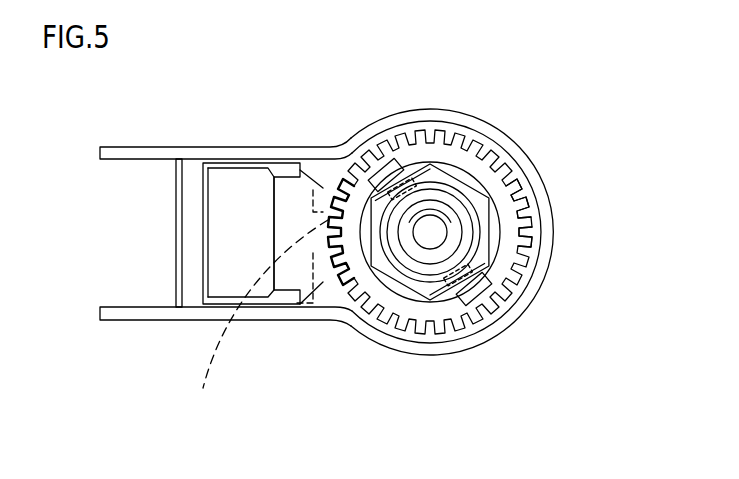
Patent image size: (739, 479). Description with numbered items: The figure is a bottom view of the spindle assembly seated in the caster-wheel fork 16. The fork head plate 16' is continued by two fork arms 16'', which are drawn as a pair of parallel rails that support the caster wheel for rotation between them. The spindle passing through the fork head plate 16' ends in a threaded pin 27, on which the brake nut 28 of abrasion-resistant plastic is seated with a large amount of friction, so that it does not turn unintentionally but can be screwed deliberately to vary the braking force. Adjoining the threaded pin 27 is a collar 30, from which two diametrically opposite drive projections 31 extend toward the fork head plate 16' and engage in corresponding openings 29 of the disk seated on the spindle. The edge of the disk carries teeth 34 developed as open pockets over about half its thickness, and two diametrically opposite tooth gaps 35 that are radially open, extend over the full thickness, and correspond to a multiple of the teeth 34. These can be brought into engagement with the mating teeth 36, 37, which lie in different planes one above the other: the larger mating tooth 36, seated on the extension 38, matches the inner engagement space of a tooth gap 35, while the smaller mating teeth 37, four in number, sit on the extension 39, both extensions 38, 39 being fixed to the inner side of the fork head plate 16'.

The caster-wheel fork 16 is at (167, 287).
The fork head plate 16' is at (494, 232).
The fork arms 16'' is at (216, 243).
The threaded pin 27 is at (430, 238).
The brake nut 28 is at (401, 273).
The openings 29 is at (388, 173).
The collar 30 is at (493, 228).
The drive projections 31 is at (393, 182).
The teeth 34 is at (520, 278).
The tooth gaps 35 is at (505, 173).
The mating tooth 36 is at (263, 302).
The mating teeth 37 is at (343, 200).
The extension 38 is at (283, 170).
The extension 39 is at (225, 205).